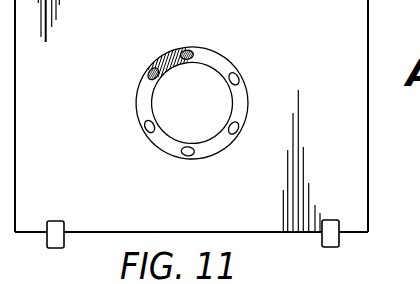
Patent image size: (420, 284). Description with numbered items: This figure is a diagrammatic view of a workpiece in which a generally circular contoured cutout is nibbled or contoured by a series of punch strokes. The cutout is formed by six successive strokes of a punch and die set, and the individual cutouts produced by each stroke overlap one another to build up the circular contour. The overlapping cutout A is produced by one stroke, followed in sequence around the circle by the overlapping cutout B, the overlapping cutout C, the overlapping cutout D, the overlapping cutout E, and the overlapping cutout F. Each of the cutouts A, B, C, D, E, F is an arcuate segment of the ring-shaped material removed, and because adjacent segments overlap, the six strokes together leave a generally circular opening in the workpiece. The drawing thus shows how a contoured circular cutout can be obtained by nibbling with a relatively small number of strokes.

The overlapping cutout A is at (166, 61).
The overlapping cutout B is at (213, 58).
The overlapping cutout C is at (245, 103).
The overlapping cutout D is at (213, 150).
The overlapping cutout E is at (166, 149).
The overlapping cutout F is at (138, 99).